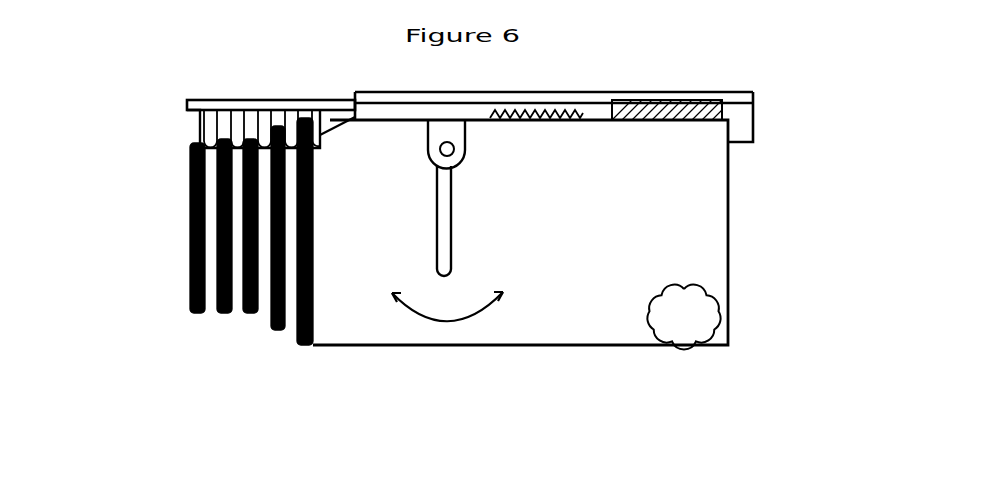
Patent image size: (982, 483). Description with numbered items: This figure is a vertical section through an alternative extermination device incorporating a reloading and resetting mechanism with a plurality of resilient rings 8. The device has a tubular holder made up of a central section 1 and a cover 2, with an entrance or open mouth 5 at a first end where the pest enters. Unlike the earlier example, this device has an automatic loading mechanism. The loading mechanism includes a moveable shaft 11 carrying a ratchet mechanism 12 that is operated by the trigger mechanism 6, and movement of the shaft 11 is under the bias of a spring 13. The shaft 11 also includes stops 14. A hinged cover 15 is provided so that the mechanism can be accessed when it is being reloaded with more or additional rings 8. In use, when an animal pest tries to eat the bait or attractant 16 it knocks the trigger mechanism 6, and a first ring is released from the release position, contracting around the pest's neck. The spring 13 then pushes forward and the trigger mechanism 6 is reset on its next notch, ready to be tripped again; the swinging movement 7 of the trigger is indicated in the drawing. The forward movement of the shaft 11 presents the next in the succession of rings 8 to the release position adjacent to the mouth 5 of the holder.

The central section 1 is at (483, 367).
The cover 2 is at (730, 259).
The open mouth 5 is at (170, 236).
The trigger mechanism 6 is at (444, 253).
The swing movement 7 is at (448, 318).
The rings 8 is at (195, 313).
The moveable shaft 11 is at (273, 100).
The ratchet mechanism 12 is at (493, 113).
The spring 13 is at (655, 93).
The stops 14 is at (202, 129).
The hinged cover 15 is at (755, 105).
The bait or attractant 16 is at (720, 310).